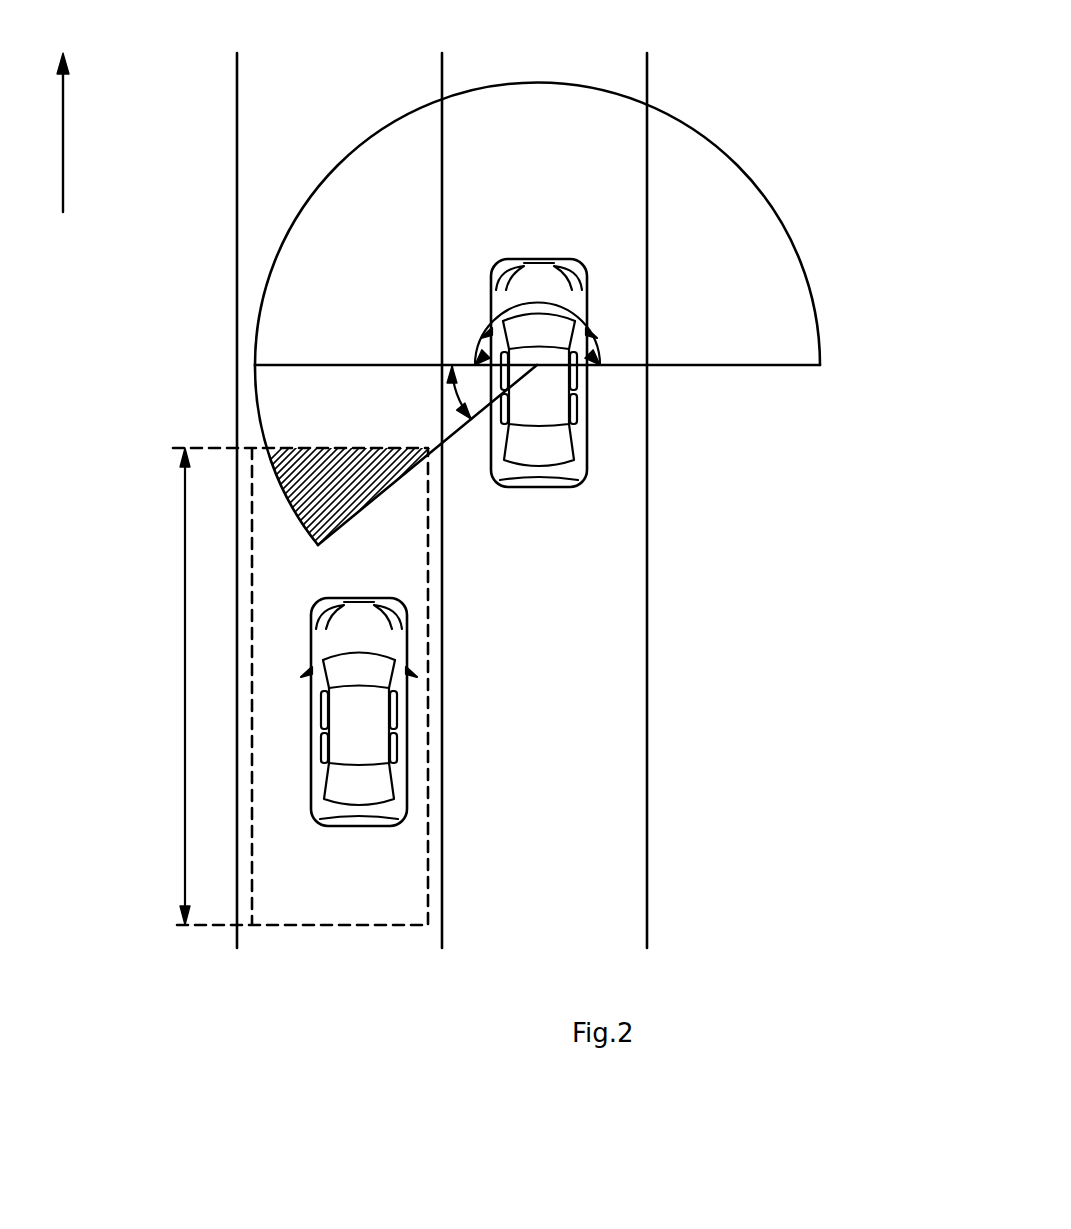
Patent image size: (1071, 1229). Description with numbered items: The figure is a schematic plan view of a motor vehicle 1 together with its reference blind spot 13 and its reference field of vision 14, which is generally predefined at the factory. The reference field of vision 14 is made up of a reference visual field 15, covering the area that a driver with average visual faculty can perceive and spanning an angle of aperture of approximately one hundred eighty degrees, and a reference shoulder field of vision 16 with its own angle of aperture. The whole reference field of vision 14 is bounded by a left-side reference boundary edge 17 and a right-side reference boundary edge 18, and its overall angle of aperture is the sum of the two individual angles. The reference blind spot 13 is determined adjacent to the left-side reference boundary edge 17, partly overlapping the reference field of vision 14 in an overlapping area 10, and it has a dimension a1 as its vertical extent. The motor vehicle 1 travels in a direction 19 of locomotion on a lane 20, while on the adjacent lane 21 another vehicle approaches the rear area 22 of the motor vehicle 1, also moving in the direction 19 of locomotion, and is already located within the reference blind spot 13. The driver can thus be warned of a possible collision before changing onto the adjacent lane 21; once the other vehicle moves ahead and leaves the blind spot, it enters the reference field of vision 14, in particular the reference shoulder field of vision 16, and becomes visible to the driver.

The motor vehicle 1 is at (588, 402).
The overlapping area 10 is at (292, 478).
The reference blind spot 13 is at (408, 880).
The reference field of vision 14 is at (496, 298).
The reference visual field 15 is at (520, 92).
The reference shoulder field of vision 16 is at (272, 417).
The left-side reference boundary edge 17 is at (393, 484).
The right-side reference boundary edge 18 is at (737, 372).
The direction of locomotion 19 is at (65, 143).
The lane 20 is at (636, 747).
The adjacent lane 21 is at (250, 182).
The rear area 22 is at (360, 828).
The dimension a1 is at (185, 690).